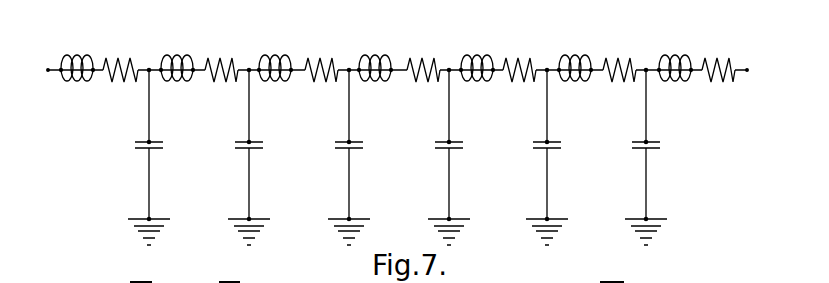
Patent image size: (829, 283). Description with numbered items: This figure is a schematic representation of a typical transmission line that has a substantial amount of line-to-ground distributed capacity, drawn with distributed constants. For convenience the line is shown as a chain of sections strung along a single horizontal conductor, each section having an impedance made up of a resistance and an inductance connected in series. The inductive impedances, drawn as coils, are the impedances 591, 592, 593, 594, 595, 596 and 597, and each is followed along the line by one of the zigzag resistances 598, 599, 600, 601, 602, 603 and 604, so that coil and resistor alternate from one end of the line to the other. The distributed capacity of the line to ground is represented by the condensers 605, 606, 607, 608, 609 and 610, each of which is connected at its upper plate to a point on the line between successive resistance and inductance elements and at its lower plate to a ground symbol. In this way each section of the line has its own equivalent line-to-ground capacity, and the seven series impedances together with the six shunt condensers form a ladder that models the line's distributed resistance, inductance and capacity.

The impedance 591 is at (77, 58).
The impedance 592 is at (176, 58).
The impedance 593 is at (272, 58).
The impedance 594 is at (370, 58).
The impedance 595 is at (470, 58).
The impedance 596 is at (565, 58).
The impedance 597 is at (667, 58).
The resistance 598 is at (118, 57).
The resistance 599 is at (219, 56).
The resistance 600 is at (319, 57).
The resistance 601 is at (417, 57).
The resistance 602 is at (516, 57).
The resistance 603 is at (613, 57).
The resistance 604 is at (709, 57).
The condenser 605 is at (136, 158).
The condenser 606 is at (241, 159).
The condenser 607 is at (339, 158).
The condenser 608 is at (439, 158).
The condenser 609 is at (539, 158).
The condenser 610 is at (637, 158).